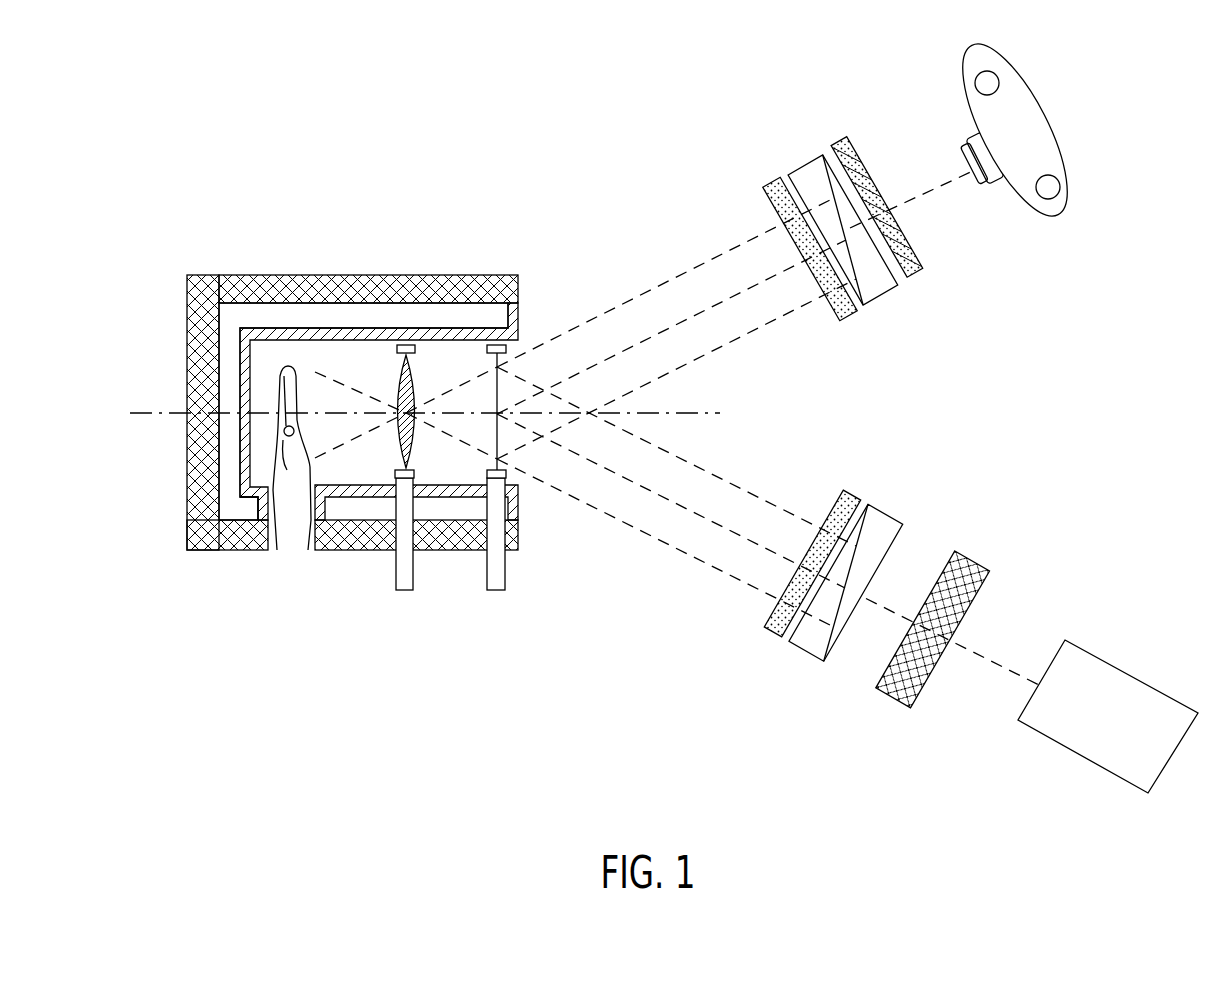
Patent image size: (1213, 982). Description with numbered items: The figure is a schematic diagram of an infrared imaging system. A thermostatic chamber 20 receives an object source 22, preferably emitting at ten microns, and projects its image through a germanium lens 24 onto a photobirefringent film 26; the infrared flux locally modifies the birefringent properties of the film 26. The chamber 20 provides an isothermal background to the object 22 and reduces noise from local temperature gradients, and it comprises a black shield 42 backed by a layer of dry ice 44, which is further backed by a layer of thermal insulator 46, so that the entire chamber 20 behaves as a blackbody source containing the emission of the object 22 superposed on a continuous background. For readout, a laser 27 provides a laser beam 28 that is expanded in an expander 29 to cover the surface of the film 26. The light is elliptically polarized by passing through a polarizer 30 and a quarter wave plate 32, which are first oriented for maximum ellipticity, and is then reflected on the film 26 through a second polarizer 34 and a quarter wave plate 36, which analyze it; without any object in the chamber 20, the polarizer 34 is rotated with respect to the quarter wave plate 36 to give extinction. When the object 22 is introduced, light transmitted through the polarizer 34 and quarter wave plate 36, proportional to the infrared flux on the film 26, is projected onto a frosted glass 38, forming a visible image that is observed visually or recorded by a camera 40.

The thermostatic chamber 20 is at (358, 402).
The object source 22 is at (262, 500).
The germanium lens 24 is at (414, 445).
The photobirefringent film 26 is at (503, 435).
The laser 27 is at (1112, 663).
The laser beam 28 is at (991, 650).
The expander 29 is at (957, 553).
The polarizer 30 is at (885, 507).
The λ/4 wave plate 32 is at (845, 491).
The second polarizer 34 is at (882, 298).
The λ/4 wave plate 36 is at (848, 320).
The frosted glass 38 is at (908, 273).
The camera 40 is at (1055, 213).
The black shield 42 is at (312, 333).
The layer of dry ice 44 is at (428, 322).
The layer of thermal insulator 46 is at (500, 275).